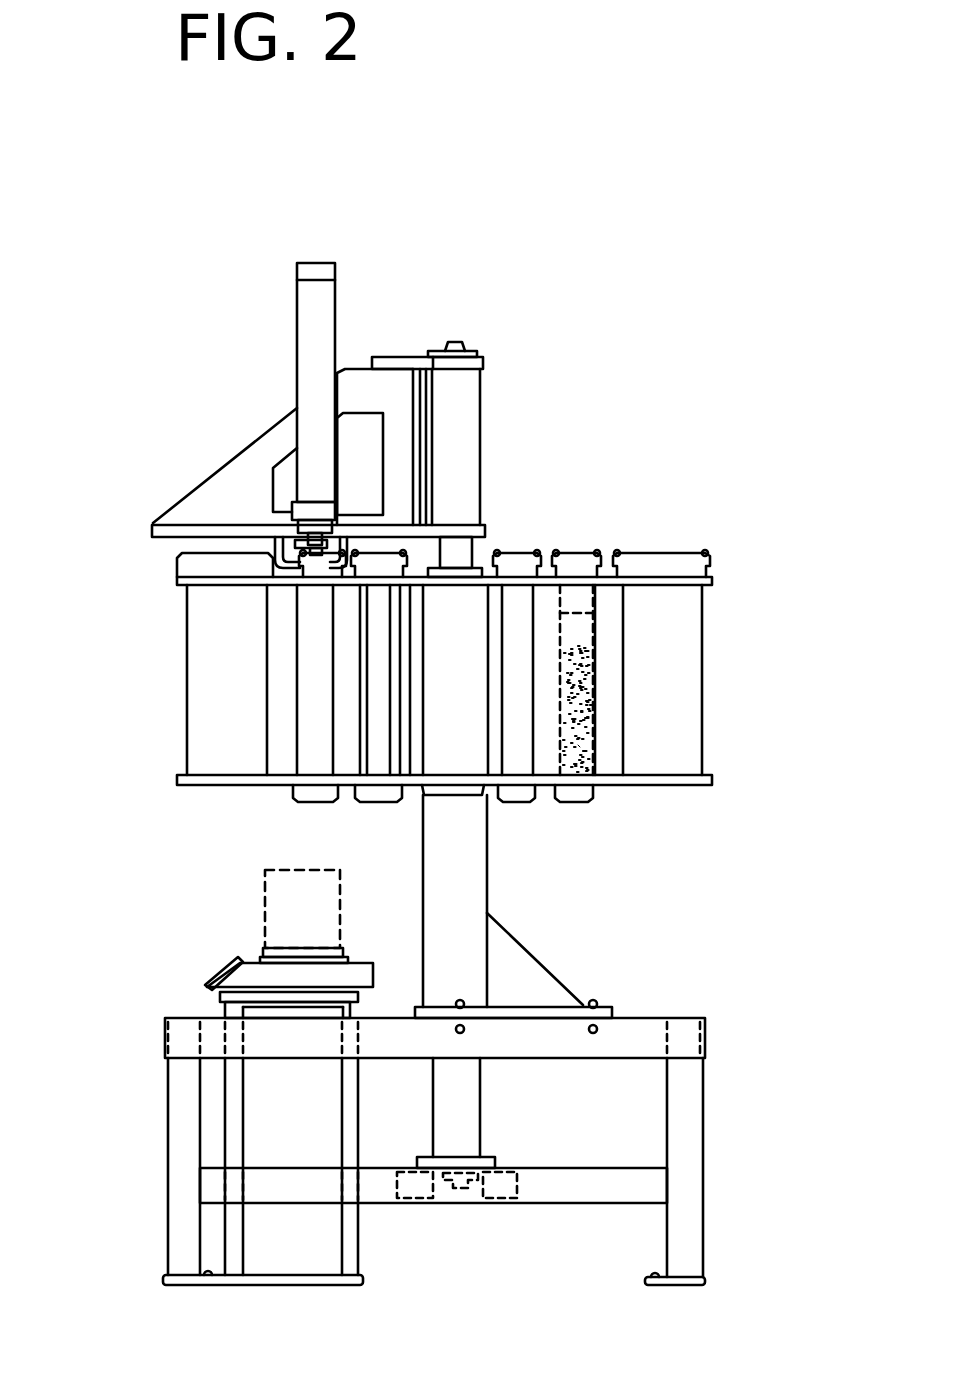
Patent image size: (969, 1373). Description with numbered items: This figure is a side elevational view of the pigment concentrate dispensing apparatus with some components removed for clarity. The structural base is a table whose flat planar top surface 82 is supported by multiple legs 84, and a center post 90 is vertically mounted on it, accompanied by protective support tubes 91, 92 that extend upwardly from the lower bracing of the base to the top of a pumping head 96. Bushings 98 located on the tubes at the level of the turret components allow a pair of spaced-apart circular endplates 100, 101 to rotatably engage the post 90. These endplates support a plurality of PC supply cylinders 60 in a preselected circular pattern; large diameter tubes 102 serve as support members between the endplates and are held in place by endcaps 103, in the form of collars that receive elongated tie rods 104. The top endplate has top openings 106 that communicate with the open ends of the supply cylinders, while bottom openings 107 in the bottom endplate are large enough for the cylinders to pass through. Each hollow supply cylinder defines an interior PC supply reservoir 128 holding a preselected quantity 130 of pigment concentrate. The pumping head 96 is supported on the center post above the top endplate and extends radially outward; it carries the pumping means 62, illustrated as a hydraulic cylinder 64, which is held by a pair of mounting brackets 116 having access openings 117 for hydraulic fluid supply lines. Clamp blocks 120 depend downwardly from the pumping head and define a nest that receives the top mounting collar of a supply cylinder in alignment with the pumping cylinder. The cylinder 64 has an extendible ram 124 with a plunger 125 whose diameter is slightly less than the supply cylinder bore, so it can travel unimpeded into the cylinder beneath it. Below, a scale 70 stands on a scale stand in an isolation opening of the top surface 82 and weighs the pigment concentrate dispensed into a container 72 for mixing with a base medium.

The PC supply cylinder 60 is at (312, 727).
The pumping means 62 is at (283, 328).
The hydraulic cylinder 64 is at (307, 375).
The scale 70 is at (217, 972).
The container 72 is at (262, 910).
The top surface 82 is at (663, 1018).
The legs 84 is at (168, 1150).
The center post 90 is at (483, 355).
The protective support tube 91 is at (505, 600).
The protective support tube 92 is at (420, 868).
The pumping head 96 is at (363, 326).
The bushings 98 is at (470, 613).
The top endplate 100 is at (712, 580).
The bottom endplate 101 is at (708, 780).
The large diameter tubes 102 is at (185, 672).
The endcaps 103 is at (183, 560).
The tie rods 104 is at (390, 675).
The top openings 106 is at (577, 573).
The bottom openings 107 is at (592, 778).
The mounting brackets 116 is at (372, 387).
The access openings 117 is at (362, 447).
The clamp blocks 120 is at (347, 543).
The ram 124 is at (303, 545).
The plunger 125 is at (310, 550).
The PC supply reservoir 128 is at (578, 685).
The quantity of PCs 130 is at (582, 733).